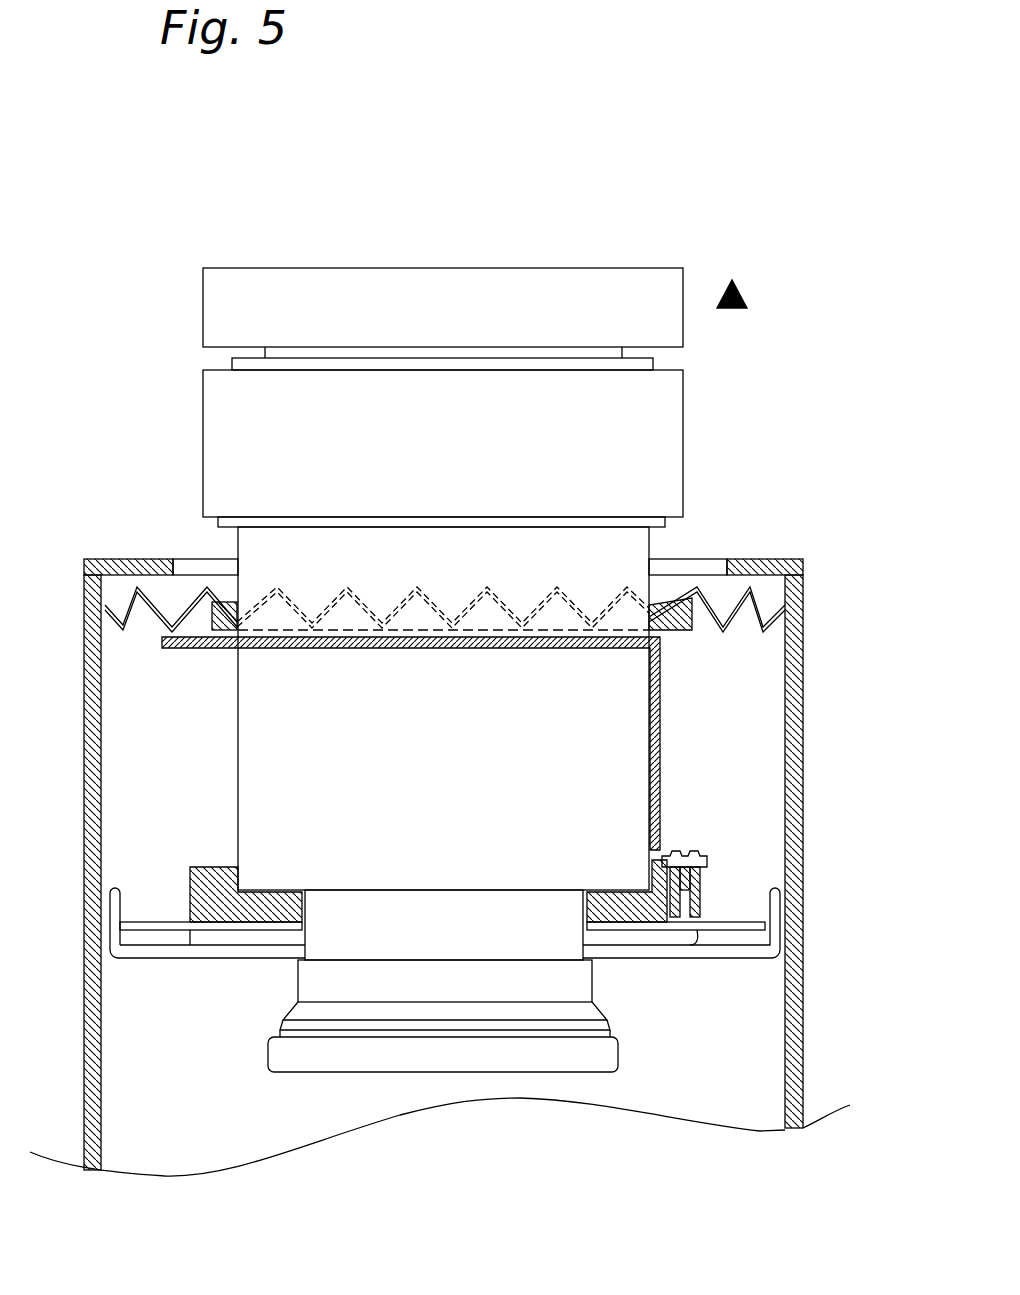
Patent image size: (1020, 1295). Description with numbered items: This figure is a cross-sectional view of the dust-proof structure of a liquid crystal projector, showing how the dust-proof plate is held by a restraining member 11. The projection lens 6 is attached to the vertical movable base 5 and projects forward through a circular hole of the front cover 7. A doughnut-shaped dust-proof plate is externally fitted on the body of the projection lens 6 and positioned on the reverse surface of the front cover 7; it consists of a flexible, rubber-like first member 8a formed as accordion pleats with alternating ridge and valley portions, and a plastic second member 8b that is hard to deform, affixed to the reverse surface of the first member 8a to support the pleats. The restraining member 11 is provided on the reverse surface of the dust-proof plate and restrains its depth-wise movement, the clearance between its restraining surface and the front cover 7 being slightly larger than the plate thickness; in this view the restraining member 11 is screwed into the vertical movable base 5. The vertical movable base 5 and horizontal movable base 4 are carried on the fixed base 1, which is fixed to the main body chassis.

The fixed base 1 is at (715, 957).
The horizontal movable base 4 is at (738, 933).
The vertical movable base 5 is at (700, 888).
The projection lens 6 is at (745, 290).
The front cover 7 is at (758, 558).
The first member 8a is at (740, 614).
The second member 8b is at (683, 630).
The restraining member 11 is at (660, 780).